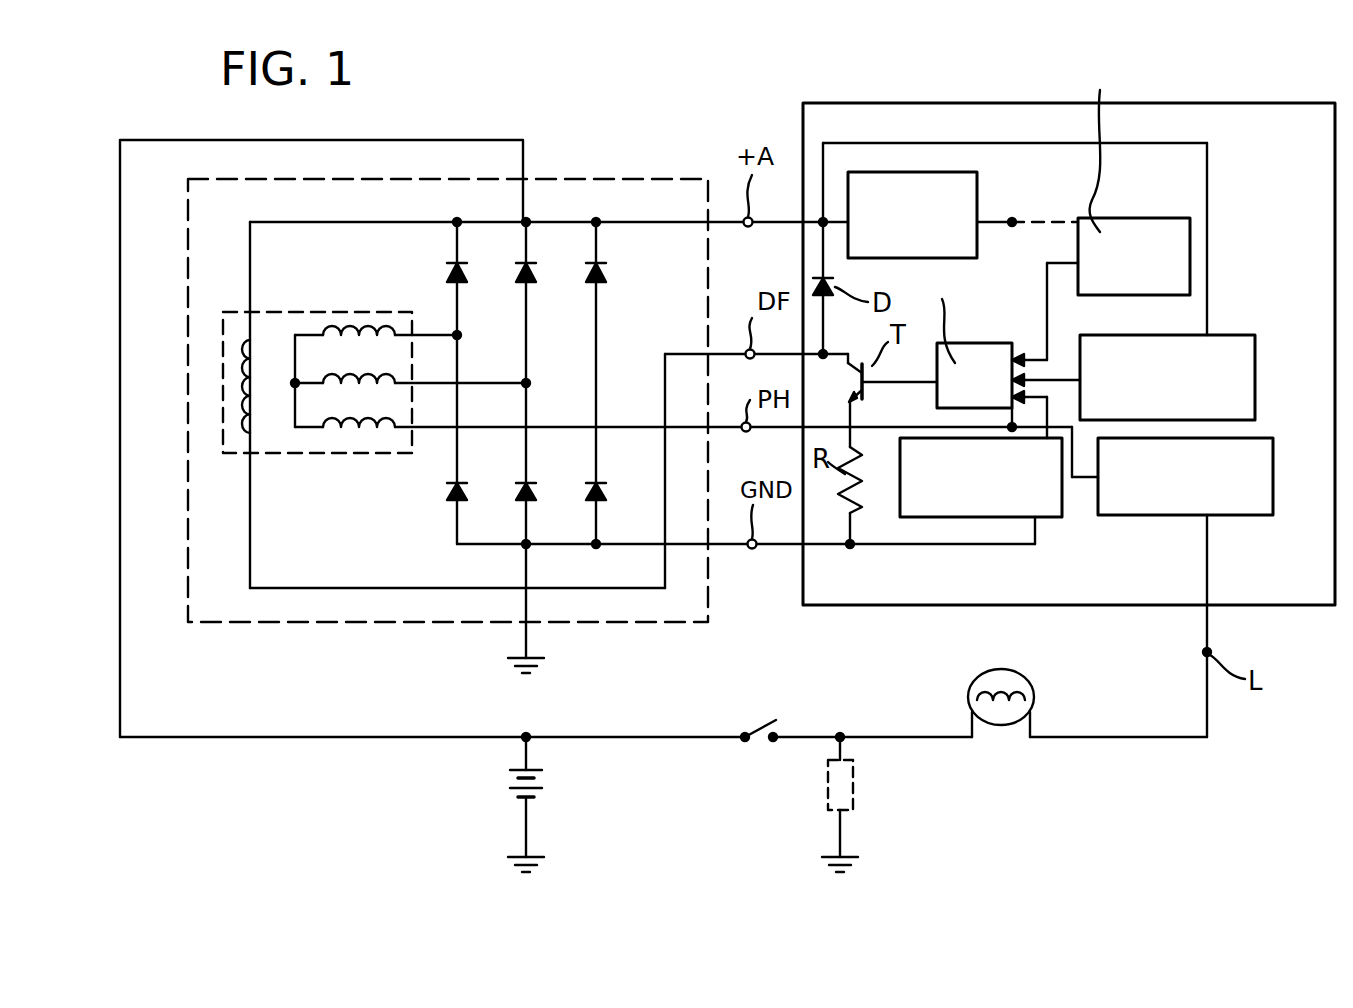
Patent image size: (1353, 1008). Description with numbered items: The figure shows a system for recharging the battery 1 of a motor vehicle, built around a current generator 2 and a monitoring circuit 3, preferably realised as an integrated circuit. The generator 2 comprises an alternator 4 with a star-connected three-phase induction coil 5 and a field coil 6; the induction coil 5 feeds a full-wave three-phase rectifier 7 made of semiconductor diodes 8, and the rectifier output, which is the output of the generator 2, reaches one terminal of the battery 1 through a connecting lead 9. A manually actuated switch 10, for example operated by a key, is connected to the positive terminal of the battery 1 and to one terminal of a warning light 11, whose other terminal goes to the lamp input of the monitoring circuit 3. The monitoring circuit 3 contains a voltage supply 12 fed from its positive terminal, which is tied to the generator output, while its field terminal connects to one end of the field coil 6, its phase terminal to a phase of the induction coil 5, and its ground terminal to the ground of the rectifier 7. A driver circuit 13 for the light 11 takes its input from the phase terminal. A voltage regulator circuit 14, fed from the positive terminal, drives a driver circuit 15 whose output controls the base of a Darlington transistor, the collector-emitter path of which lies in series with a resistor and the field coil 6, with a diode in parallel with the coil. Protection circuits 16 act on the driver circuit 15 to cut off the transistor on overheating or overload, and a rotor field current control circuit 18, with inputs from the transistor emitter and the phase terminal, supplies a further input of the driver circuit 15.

The battery 1 is at (498, 782).
The current generator 2 is at (590, 179).
The monitoring circuit 3 is at (958, 103).
The alternator 4 is at (335, 312).
The three-phase induction coil 5 is at (285, 428).
The field coil 6 is at (266, 356).
The three-phase rectifier 7 is at (433, 298).
The semi-conductor diodes 8 is at (463, 283).
The connecting lead 9 is at (452, 140).
The switch 10 is at (763, 741).
The warning light 11 is at (1008, 725).
The voltage supply 12 is at (958, 172).
The driver circuit for the light 13 is at (1265, 448).
The voltage regulator circuit 14 is at (1252, 343).
The driver circuit 15 is at (1010, 343).
The protection circuits 16 is at (1152, 218).
The rotor field current control circuit 18 is at (1057, 505).